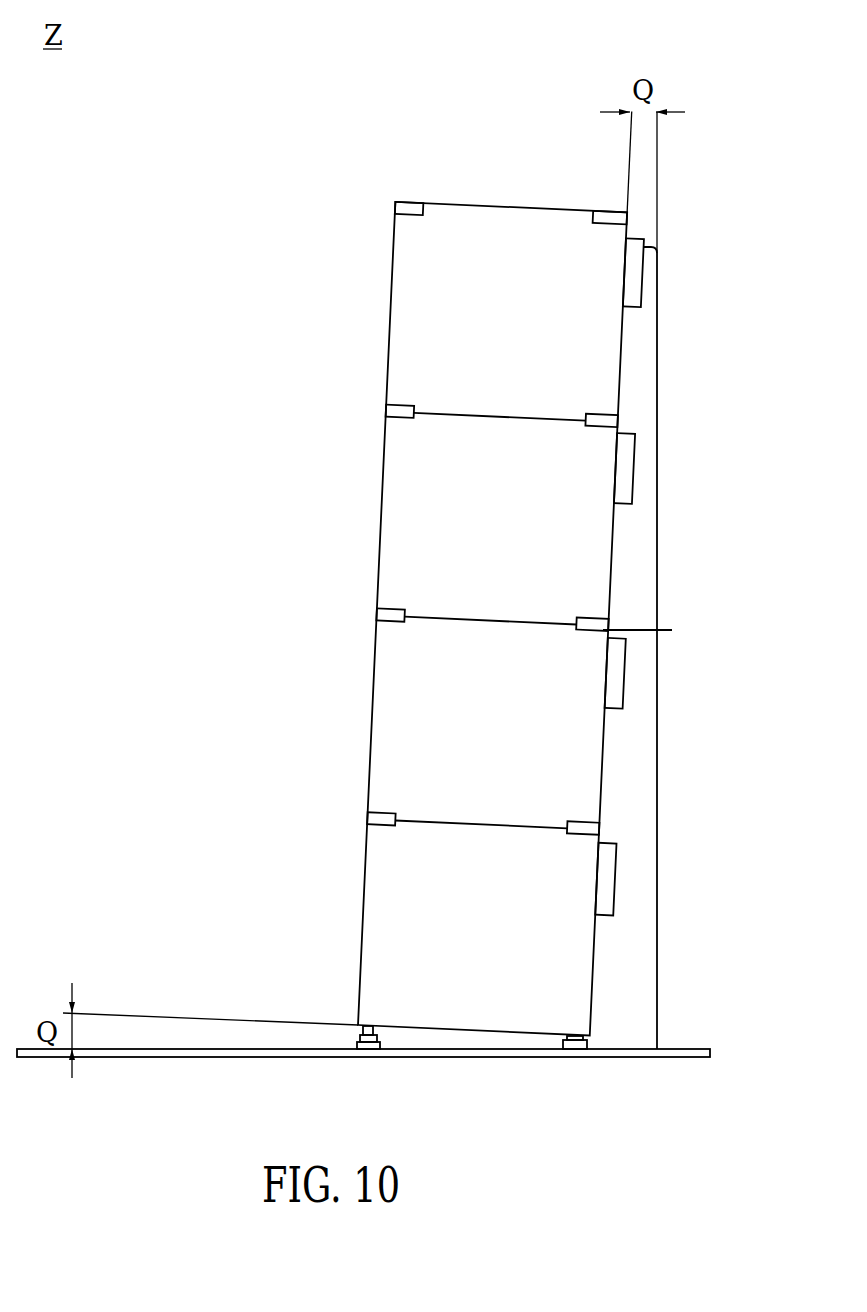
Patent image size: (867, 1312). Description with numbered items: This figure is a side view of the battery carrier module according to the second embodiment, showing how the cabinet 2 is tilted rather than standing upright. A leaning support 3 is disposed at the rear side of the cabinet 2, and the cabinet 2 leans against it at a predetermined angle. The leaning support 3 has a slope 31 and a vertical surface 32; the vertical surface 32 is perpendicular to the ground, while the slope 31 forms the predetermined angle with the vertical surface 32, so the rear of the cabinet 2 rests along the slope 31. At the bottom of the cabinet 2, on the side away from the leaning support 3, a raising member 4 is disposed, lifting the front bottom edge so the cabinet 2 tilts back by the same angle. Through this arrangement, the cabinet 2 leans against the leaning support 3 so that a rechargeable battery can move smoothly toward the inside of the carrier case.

The cabinet 2 is at (508, 228).
The leaning support 3 is at (636, 535).
The slope 31 is at (610, 585).
The vertical surface 32 is at (657, 490).
The raising member 4 is at (355, 1049).